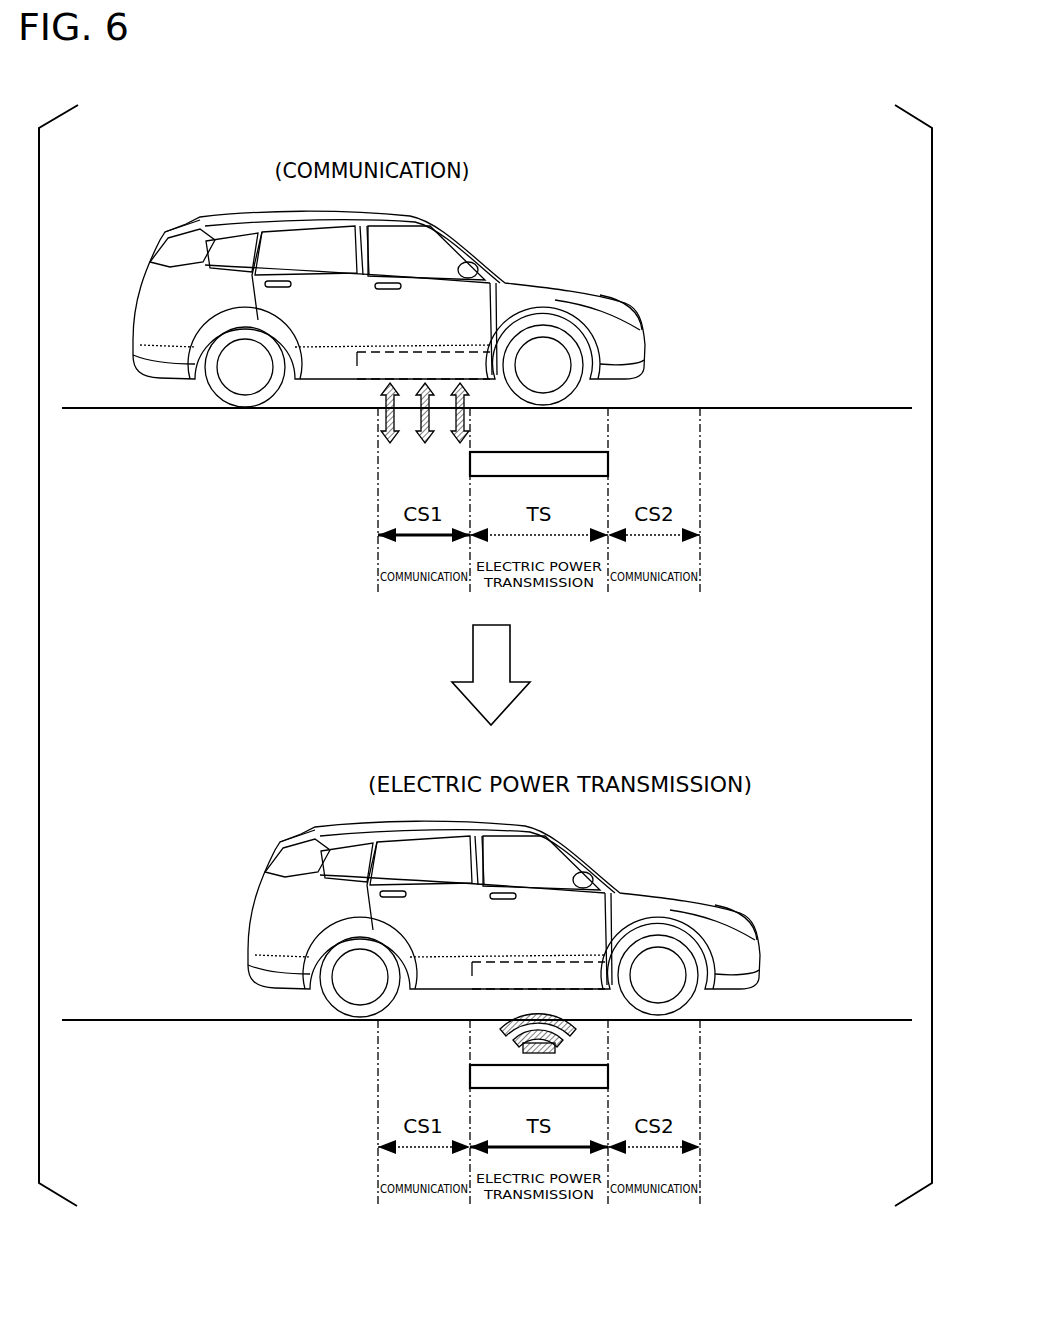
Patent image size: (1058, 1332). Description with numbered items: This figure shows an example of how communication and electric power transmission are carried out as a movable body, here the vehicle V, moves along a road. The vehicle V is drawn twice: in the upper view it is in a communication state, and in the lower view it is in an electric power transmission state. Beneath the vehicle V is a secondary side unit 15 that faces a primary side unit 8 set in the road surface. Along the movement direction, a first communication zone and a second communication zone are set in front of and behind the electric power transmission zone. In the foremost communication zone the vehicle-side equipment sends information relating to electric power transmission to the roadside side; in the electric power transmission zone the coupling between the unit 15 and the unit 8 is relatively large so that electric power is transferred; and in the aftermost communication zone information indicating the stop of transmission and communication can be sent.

The vehicle V is at (247, 213).
The power receiving unit (battery) 15 is at (448, 352).
The power transmission device (ground coil) 8 is at (610, 462).